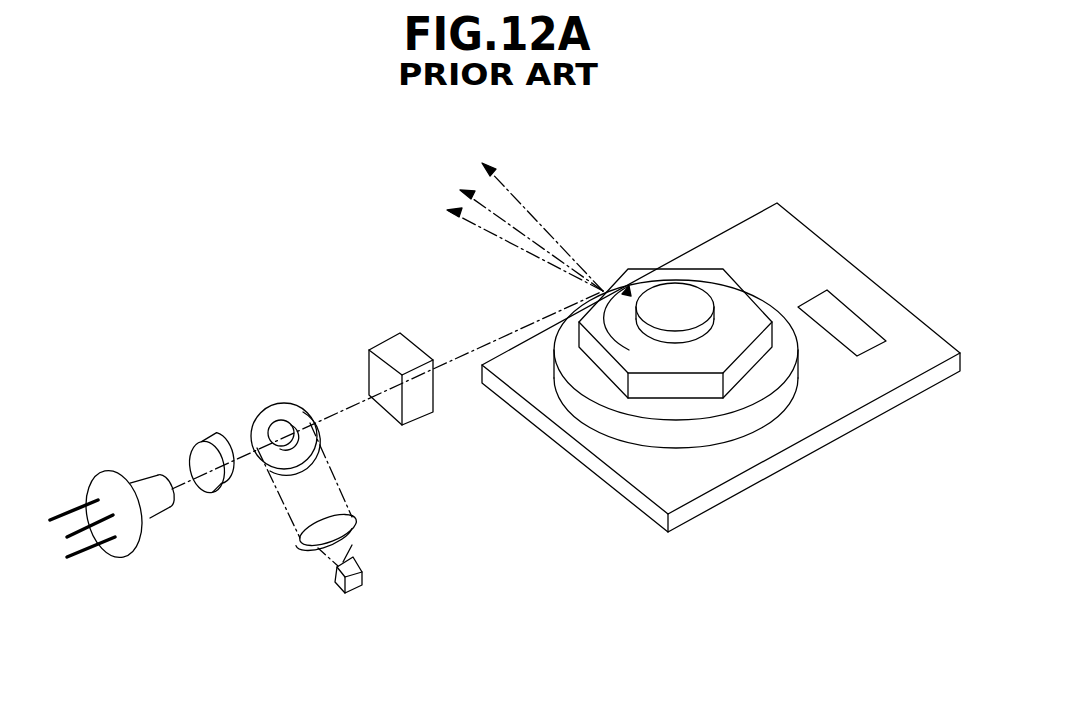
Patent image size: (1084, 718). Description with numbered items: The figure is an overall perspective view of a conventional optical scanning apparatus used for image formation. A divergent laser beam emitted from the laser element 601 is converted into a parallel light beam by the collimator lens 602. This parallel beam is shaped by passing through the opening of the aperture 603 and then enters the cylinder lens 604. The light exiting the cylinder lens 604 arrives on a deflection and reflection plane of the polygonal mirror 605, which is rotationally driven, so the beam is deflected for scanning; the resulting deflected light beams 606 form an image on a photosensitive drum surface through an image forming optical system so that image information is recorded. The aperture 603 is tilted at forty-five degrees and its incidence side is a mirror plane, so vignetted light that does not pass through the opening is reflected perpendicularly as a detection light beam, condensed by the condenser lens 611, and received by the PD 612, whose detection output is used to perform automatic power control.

The laser element 601 is at (157, 502).
The collimator lens 602 is at (227, 492).
The aperture 603 is at (287, 410).
The cylinder lens 604 is at (418, 407).
The polygonal mirror 605 is at (645, 278).
The deflected light beams 606 is at (555, 237).
The condenser lens 611 is at (357, 519).
The PD 612 is at (365, 567).